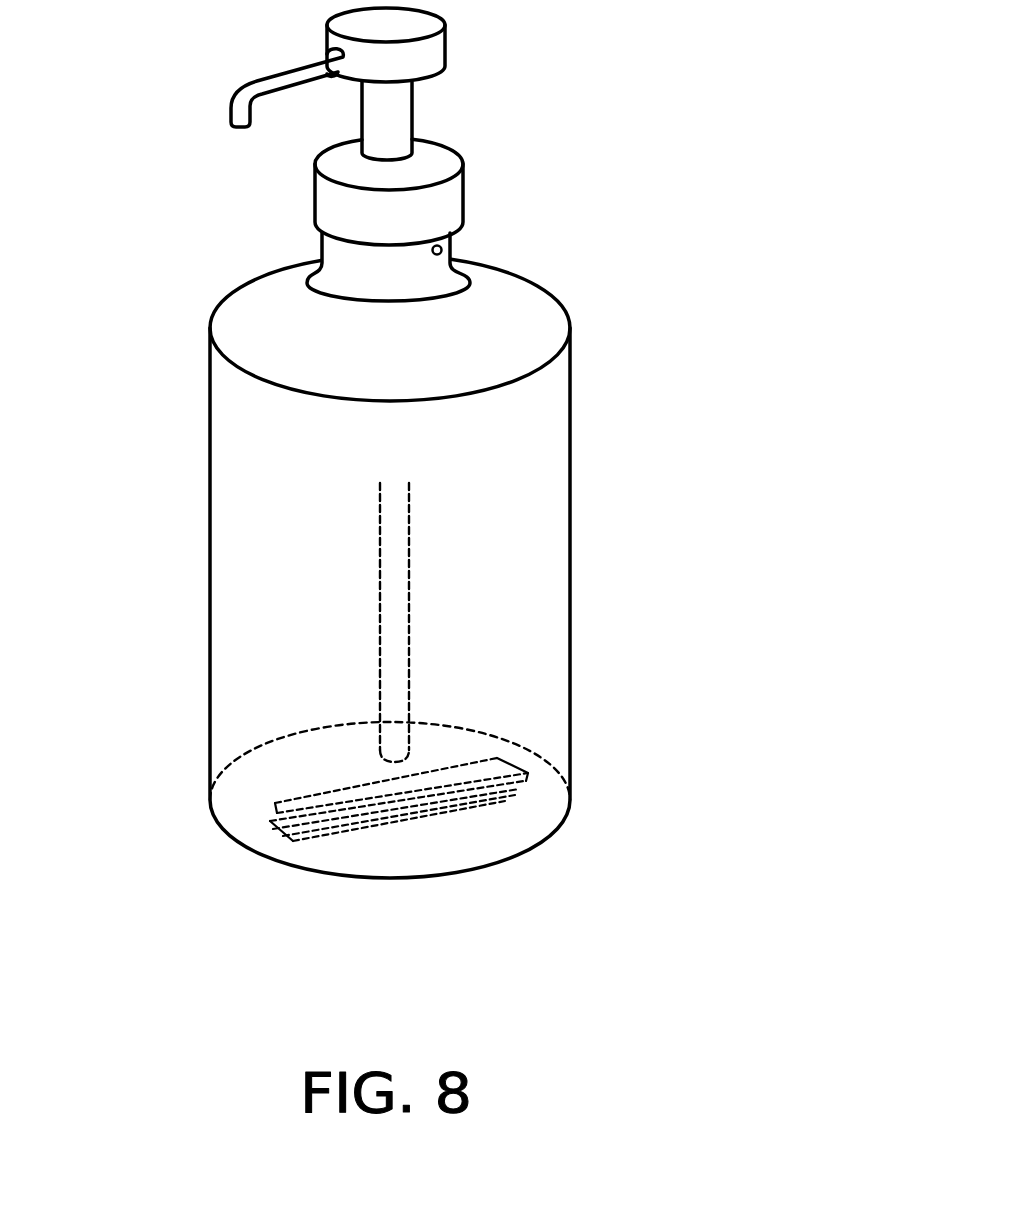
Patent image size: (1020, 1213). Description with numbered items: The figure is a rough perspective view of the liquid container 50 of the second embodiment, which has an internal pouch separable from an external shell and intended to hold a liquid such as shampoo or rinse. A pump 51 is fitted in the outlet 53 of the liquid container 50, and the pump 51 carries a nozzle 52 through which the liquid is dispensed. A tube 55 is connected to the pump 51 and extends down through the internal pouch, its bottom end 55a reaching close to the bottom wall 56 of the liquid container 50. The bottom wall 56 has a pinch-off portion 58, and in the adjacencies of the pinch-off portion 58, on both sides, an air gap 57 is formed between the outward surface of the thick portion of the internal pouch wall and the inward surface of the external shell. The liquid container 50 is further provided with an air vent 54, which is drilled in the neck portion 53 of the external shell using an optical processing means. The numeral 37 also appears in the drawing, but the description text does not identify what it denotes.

The liquid container 50 is at (143, 401).
The pump 51 is at (490, 97).
The nozzle 52 is at (227, 98).
The outlet 53 is at (328, 248).
The air vent 54 is at (443, 250).
The tube 55 is at (410, 572).
The bottom end 55a is at (409, 760).
The bottom wall 56 is at (513, 858).
The air gap 57 is at (343, 832).
The pinch-off portion 58 is at (272, 823).
The transponder tag 37 is at (307, 793).